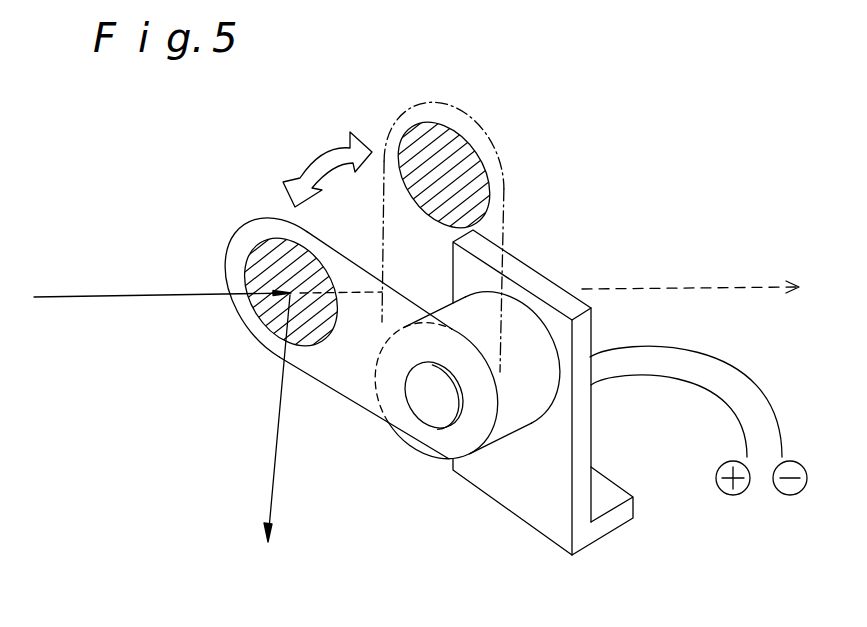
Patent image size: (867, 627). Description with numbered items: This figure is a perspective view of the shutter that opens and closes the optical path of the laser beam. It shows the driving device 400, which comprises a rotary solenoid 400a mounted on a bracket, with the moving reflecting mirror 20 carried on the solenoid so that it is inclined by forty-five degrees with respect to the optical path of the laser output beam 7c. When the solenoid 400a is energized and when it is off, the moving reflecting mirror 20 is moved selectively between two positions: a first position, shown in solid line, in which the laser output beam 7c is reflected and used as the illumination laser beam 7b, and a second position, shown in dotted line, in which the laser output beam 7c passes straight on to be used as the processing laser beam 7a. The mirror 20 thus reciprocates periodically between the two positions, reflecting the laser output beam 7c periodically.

The driving device 400 is at (222, 180).
The rotary solenoid 400a is at (517, 418).
The moving reflecting mirror 20 is at (261, 337).
The processing laser beam 7a is at (648, 288).
The illumination laser beam 7b is at (272, 482).
The laser output beam 7c is at (55, 297).